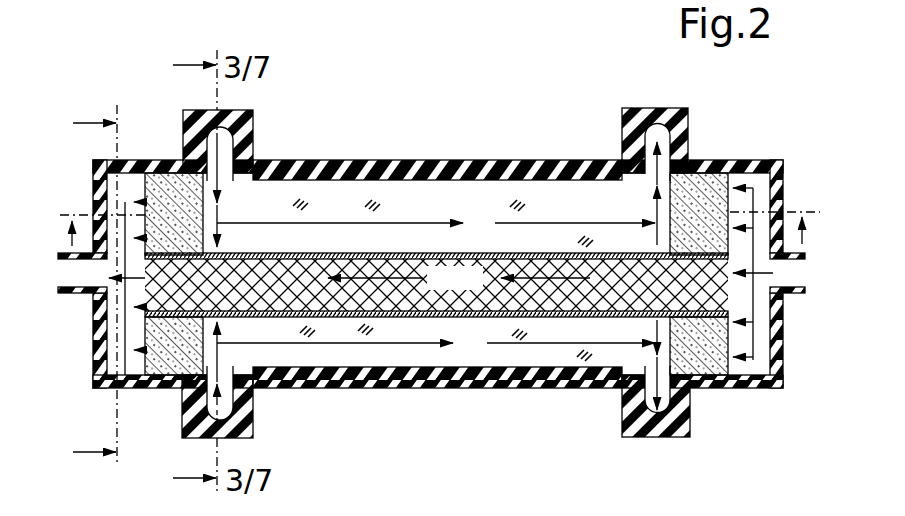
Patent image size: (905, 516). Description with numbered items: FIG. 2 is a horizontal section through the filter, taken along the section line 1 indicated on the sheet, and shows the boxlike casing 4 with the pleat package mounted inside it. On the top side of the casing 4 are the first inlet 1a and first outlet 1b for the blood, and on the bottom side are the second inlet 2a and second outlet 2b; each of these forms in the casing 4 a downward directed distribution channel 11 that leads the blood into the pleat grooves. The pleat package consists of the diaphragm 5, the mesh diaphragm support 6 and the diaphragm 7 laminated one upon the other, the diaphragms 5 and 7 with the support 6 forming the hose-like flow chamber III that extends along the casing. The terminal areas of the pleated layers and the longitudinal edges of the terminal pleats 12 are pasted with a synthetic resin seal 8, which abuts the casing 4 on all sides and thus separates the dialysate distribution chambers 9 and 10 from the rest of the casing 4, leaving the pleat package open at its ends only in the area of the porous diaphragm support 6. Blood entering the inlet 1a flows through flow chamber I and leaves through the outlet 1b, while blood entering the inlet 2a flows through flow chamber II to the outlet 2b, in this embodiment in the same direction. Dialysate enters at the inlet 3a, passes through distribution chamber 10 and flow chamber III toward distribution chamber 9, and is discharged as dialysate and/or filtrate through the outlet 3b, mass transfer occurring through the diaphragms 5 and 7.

The first inlet 1a is at (258, 112).
The first outlet 1b is at (641, 109).
The second inlet 2a is at (256, 434).
The second outlet 2b is at (620, 432).
The dialysate inlet 3a is at (790, 300).
The dialysate and/or filtrate outlet 3b is at (86, 294).
The boxlike casing 4 is at (467, 158).
The diaphragm 5 is at (358, 386).
The diaphragm support 6 is at (331, 262).
The diaphragm 7 is at (300, 190).
The seal 8 is at (158, 178).
The distribution chamber 9 is at (122, 368).
The distribution chamber 10 is at (763, 370).
The distribution channels 11 is at (225, 170).
The terminal pleats 12 is at (444, 210).
The section line 1 is at (106, 288).
The flow chamber I is at (503, 191).
The flow chamber II is at (508, 351).
The flow chamber III is at (518, 262).